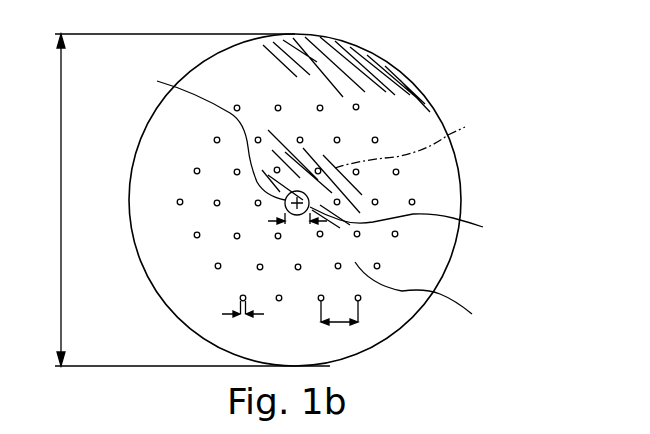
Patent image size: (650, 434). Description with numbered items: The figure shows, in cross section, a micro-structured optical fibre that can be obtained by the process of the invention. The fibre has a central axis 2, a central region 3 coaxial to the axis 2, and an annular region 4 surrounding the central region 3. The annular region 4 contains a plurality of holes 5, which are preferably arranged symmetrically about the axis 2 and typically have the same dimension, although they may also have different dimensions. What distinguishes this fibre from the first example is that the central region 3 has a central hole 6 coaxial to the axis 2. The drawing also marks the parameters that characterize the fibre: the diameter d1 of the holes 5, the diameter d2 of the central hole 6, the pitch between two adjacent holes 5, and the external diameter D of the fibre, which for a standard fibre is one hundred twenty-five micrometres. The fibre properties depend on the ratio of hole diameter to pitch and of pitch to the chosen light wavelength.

The central axis 2 is at (414, 135).
The central region 3 is at (411, 224).
The annular region 4 is at (428, 299).
The holes 5 is at (194, 172).
The central hole 6 is at (217, 140).
The external diameter of the fibre D is at (182, 200).
The diameter of the holes d1 is at (243, 325).
The diameter of the central hole d2 is at (297, 233).